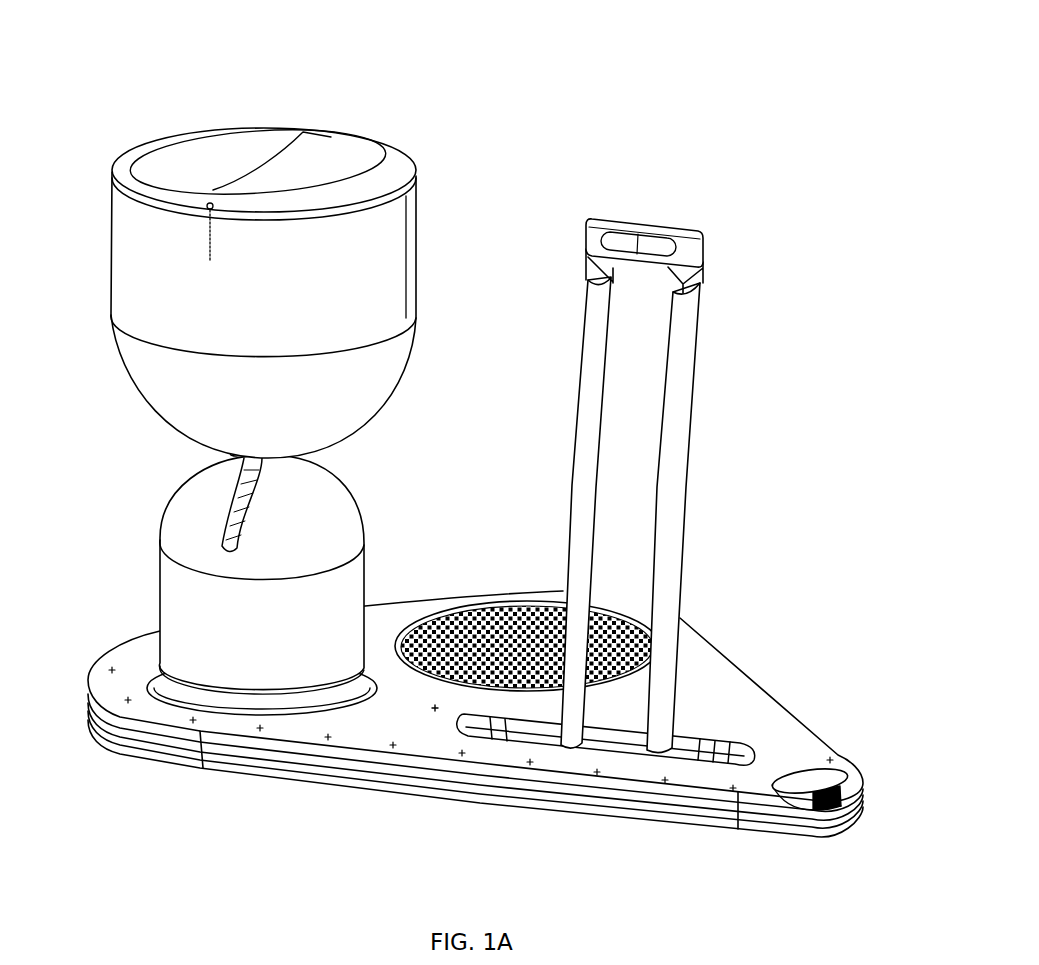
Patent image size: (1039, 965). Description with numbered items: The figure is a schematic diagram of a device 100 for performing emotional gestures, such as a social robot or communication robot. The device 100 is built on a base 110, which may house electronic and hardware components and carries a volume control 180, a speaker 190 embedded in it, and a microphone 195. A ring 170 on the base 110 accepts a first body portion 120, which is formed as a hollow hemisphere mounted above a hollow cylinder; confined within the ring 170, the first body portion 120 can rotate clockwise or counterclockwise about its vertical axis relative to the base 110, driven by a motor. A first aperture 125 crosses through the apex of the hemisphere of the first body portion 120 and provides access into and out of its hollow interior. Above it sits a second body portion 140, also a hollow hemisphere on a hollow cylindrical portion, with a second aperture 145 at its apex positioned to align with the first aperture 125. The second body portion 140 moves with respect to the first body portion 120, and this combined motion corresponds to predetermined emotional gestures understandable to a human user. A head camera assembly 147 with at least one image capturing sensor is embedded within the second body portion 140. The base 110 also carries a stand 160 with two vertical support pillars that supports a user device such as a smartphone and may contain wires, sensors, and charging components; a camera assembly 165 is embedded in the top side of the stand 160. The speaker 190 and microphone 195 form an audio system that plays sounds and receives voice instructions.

The device 100 is at (765, 106).
The base 110 is at (765, 710).
The first body portion 120 is at (175, 535).
The first aperture 125 is at (243, 478).
The second body portion 140 is at (283, 285).
The second aperture 145 is at (228, 443).
The head camera assembly 147 is at (210, 200).
The stand 160 is at (685, 465).
The camera assembly 165 is at (690, 240).
The ring 170 is at (150, 673).
The volume control 180 is at (820, 783).
The speaker 190 is at (520, 605).
The microphone 195 is at (435, 722).